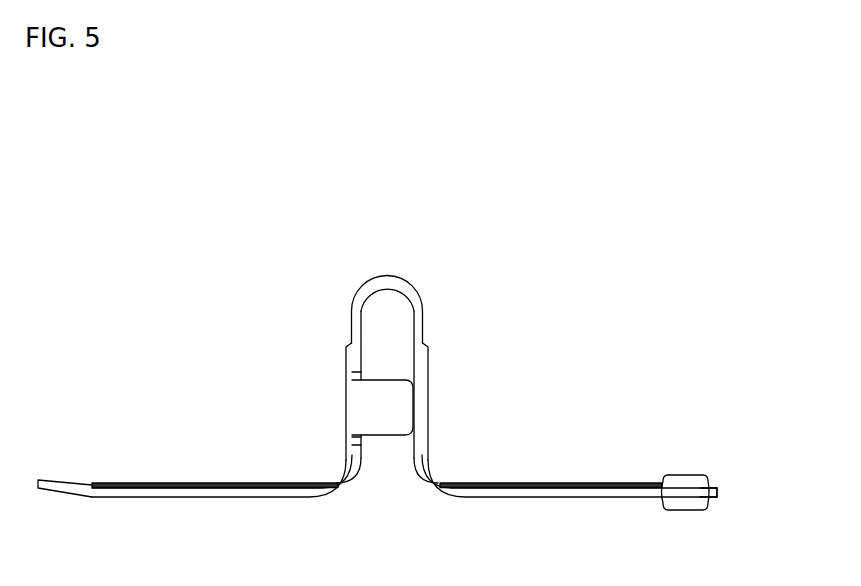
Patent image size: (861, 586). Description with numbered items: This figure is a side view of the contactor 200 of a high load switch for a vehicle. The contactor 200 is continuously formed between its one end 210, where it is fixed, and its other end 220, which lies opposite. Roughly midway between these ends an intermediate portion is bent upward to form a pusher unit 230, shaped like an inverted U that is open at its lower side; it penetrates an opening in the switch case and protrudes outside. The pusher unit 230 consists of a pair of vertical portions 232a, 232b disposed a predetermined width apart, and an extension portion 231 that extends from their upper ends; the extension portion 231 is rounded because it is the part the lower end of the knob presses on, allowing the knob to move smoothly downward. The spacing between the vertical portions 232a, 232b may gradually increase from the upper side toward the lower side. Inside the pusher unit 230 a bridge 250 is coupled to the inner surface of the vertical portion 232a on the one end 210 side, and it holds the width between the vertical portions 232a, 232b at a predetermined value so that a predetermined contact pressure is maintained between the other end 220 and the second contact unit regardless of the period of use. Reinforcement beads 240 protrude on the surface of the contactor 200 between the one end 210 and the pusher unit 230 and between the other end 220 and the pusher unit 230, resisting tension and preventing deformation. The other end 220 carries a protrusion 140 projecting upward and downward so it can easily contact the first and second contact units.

The contactor 200 is at (145, 297).
The one end 210 is at (55, 490).
The other end 220 is at (717, 491).
The pusher unit 230 is at (392, 310).
The extension portion 231 is at (387, 283).
The vertical portion 232a is at (353, 332).
The vertical portion 232b is at (449, 336).
The reinforcement bead 240 is at (163, 484).
The bridge 250 is at (380, 420).
The protrusion 140 is at (688, 480).